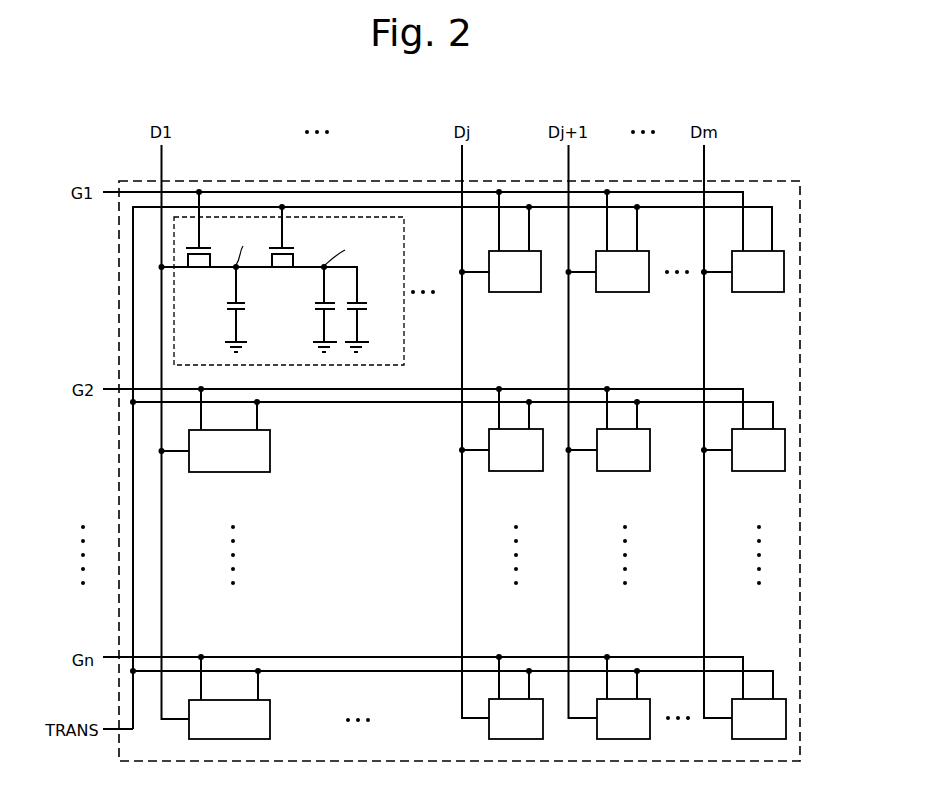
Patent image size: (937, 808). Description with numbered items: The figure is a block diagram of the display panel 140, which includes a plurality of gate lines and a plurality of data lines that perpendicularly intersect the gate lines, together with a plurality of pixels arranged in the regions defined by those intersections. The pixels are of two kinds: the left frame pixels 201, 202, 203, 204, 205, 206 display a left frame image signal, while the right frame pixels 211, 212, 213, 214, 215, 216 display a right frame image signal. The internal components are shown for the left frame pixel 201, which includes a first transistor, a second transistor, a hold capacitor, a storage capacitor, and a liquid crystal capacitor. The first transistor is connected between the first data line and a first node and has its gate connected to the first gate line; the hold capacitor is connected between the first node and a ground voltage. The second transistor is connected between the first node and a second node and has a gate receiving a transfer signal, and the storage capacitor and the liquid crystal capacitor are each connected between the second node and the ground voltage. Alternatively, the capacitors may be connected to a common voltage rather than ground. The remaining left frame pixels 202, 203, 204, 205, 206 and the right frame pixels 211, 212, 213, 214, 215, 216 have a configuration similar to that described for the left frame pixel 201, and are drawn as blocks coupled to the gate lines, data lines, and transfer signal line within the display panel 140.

The display panel 140 is at (766, 181).
The left frame pixel 201 is at (404, 335).
The left frame pixel 202 is at (501, 242).
The left frame pixel 203 is at (216, 430).
The left frame pixel 204 is at (502, 430).
The left frame pixel 205 is at (229, 698).
The left frame pixel 206 is at (516, 698).
The right frame pixel 211 is at (609, 242).
The right frame pixel 212 is at (744, 271).
The right frame pixel 213 is at (610, 430).
The right frame pixel 214 is at (744, 450).
The right frame pixel 215 is at (623, 698).
The right frame pixel 216 is at (759, 719).